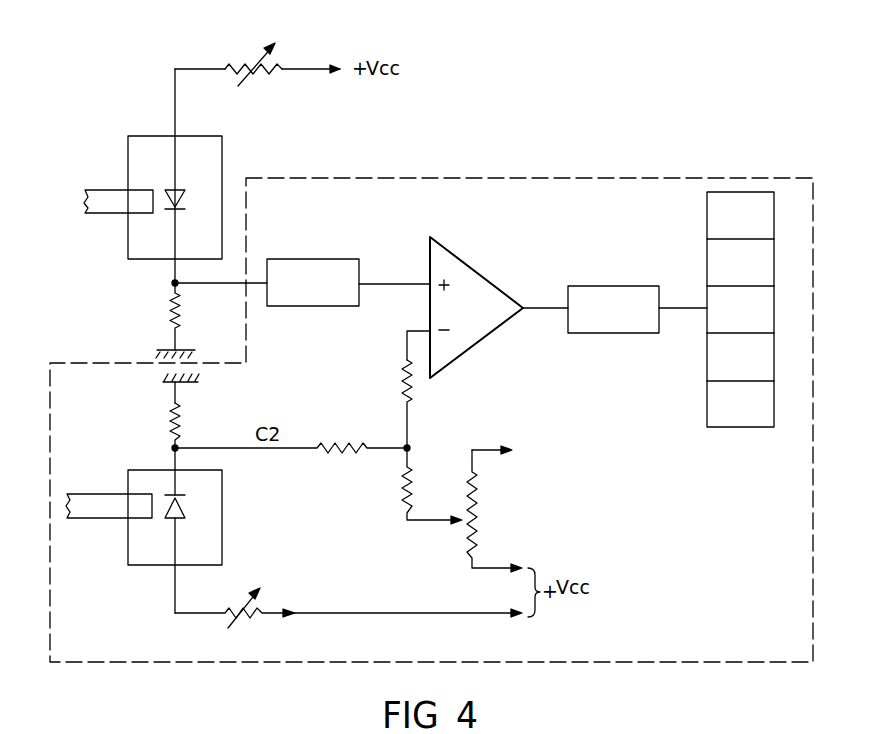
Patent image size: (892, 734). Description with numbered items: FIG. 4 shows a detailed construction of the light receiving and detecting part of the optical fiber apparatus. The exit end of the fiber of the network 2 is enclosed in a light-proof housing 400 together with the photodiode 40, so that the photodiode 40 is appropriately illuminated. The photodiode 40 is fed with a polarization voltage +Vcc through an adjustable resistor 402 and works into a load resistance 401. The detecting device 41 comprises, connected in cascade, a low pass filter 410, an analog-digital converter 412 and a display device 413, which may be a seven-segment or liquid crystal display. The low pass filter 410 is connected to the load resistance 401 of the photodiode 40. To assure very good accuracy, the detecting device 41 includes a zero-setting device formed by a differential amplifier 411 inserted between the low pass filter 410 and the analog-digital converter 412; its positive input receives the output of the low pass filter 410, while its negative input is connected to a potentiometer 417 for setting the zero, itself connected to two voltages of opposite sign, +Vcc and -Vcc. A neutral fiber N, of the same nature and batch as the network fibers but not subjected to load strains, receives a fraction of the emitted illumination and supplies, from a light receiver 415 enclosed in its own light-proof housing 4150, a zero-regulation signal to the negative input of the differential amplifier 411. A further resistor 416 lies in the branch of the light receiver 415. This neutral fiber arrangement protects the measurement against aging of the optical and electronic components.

The network 2 is at (97, 189).
The neutral fiber N is at (87, 494).
The photodiode 40 is at (185, 200).
The detecting device 41 is at (500, 196).
The housing 400 is at (222, 152).
The load resistance 401 is at (172, 310).
The adjustable resistor 402 is at (242, 64).
The low pass filter 410 is at (322, 272).
The differential amplifier 411 is at (472, 268).
The analog-digital converter 412 is at (618, 286).
The display device 413 is at (738, 417).
The light receiver 415 is at (188, 508).
The resistor 416 is at (182, 420).
The potentiometer 417 is at (470, 475).
The light-proof housing 4150 is at (222, 485).